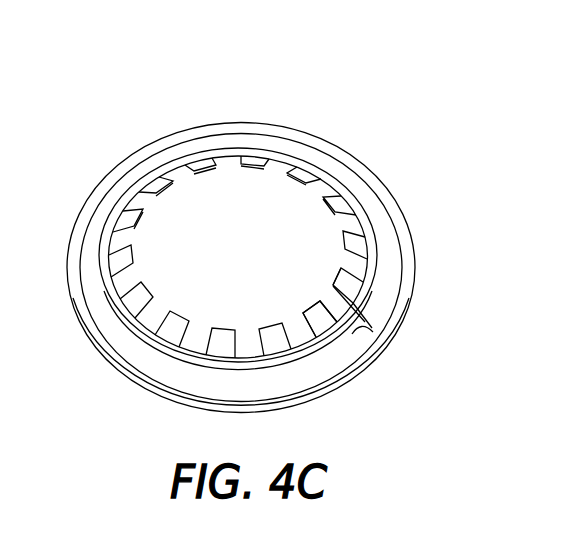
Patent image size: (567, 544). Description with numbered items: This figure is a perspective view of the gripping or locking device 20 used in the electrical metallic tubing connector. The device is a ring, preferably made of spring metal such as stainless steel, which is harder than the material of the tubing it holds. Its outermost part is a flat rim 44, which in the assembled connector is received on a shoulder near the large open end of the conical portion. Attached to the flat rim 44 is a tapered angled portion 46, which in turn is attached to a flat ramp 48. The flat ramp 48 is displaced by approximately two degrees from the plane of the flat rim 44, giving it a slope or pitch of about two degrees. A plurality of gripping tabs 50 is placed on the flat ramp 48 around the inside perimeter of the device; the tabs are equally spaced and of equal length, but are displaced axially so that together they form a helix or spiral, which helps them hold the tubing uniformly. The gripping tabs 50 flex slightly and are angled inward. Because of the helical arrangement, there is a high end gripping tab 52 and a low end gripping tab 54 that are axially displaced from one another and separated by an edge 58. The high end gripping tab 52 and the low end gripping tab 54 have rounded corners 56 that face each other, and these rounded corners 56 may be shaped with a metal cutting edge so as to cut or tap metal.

The gripping or locking device 20 is at (332, 129).
The flat rim 44 is at (413, 262).
The tapered angled portion 46 is at (374, 212).
The flat ramp 48 is at (142, 342).
The gripping tabs 50 is at (135, 207).
The high end gripping tab 52 is at (303, 313).
The low end gripping tab 54 is at (331, 271).
The rounded corners 56 is at (334, 287).
The edge 58 is at (365, 335).